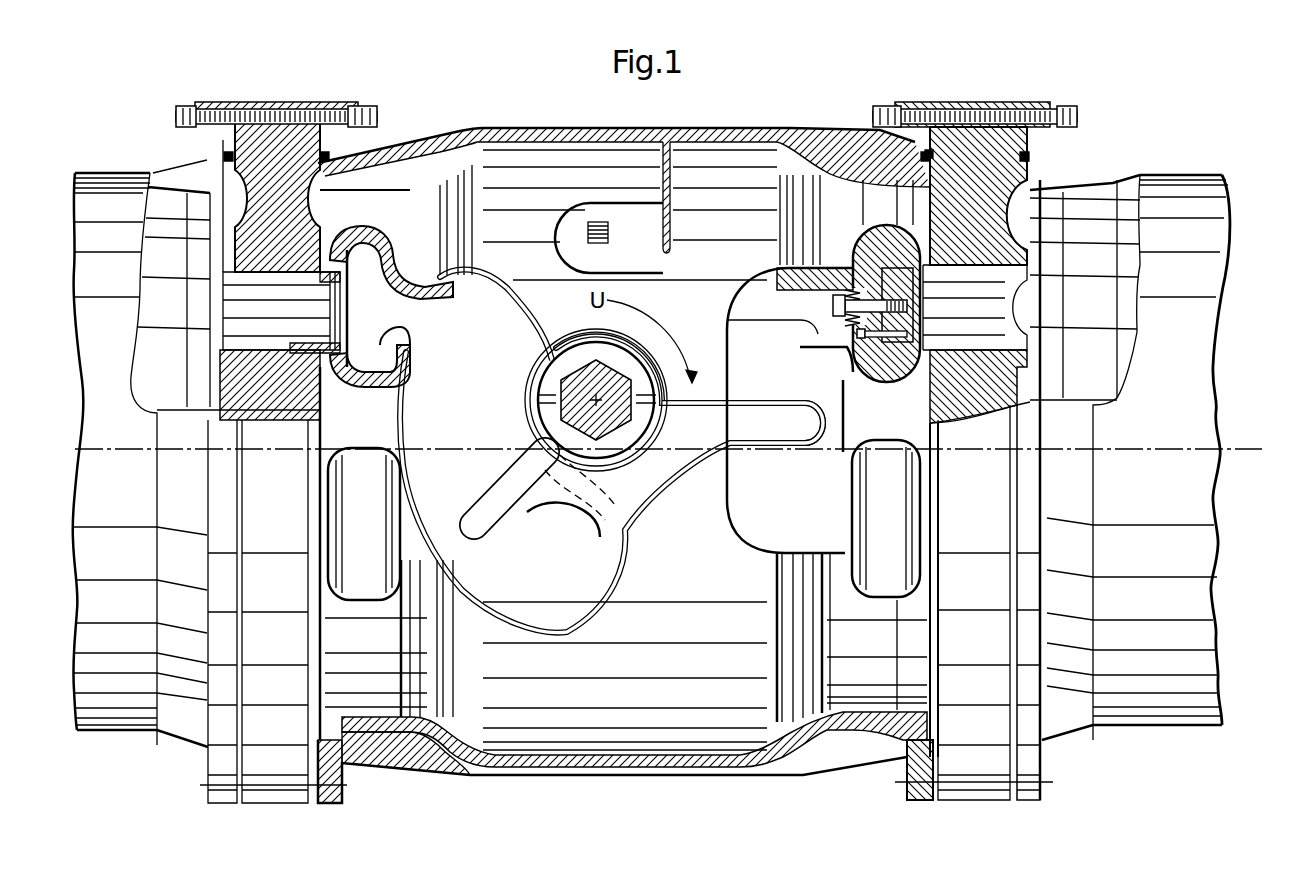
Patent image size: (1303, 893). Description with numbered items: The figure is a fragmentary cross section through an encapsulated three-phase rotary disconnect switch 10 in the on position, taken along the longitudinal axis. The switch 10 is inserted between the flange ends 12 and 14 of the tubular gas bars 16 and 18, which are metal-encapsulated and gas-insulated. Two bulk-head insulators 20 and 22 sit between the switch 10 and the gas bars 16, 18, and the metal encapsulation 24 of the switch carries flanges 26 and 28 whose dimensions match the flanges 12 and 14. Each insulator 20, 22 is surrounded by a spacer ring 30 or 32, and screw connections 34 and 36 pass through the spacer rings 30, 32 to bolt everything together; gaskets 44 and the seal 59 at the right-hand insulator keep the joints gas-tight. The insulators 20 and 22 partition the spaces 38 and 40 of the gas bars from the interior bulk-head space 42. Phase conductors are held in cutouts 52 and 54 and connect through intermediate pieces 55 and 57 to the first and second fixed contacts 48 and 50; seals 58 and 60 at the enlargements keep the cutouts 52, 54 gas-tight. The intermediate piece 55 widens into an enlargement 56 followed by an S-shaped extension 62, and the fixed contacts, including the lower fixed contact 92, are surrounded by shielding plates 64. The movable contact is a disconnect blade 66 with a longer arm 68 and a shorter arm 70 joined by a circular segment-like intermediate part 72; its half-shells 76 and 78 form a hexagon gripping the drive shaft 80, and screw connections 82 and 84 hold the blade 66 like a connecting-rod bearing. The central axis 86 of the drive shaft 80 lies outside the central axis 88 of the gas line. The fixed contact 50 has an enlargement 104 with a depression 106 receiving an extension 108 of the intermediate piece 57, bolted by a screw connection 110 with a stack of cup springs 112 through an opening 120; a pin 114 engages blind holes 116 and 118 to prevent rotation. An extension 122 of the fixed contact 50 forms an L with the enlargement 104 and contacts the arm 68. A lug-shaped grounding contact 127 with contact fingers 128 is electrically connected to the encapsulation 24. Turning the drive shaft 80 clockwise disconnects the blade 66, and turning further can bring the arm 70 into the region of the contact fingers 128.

The rotary disconnect switch 10 is at (641, 776).
The flange end 12 is at (223, 797).
The flange end 14 is at (1028, 797).
The tubular gas bar 16 is at (116, 718).
The tubular gas bar 18 is at (1170, 712).
The bulk-head insulator 20 is at (245, 101).
The bulk-head insulator 22 is at (988, 116).
The metal encapsulation 24 is at (500, 766).
The flange 26 is at (333, 797).
The flange 28 is at (920, 797).
The spacer ring 30 is at (283, 101).
The spacer ring 32 is at (950, 101).
The screw connection 34 is at (178, 113).
The screw connection 36 is at (1078, 115).
The space 38 is at (160, 212).
The space 40 is at (1128, 196).
The bulk-head space 42 is at (508, 150).
The gasket 44 is at (323, 124).
The first fixed contact 48 is at (392, 246).
The second fixed contact 50 is at (800, 549).
The cutout 52 is at (283, 298).
The cutout 54 is at (1025, 275).
The intermediate piece 55 is at (300, 292).
The enlargement 56 is at (370, 238).
The intermediate piece 57 is at (1020, 292).
The seal 58 is at (348, 270).
The seal 59 is at (925, 126).
The seal 60 is at (958, 402).
The S-shaped extension 62 is at (460, 300).
The shielding plates 64 is at (503, 277).
The disconnect blade 66 is at (650, 498).
The arm 68 is at (677, 410).
The arm 70 is at (477, 517).
The intermediate part 72 is at (600, 513).
The first half-shell 76 is at (632, 447).
The second half-shell 78 is at (615, 350).
The drive shaft 80 is at (576, 372).
The screw connection 82 is at (648, 352).
The screw connection 84 is at (532, 380).
The central axis 86 is at (590, 402).
The central axis 88 is at (1236, 452).
The fixed contact 92 is at (437, 553).
The enlargement 104 is at (853, 248).
The depression 106 is at (889, 375).
The extension 108 is at (902, 378).
The screw connection 110 is at (858, 250).
The stack of cup springs 112 is at (815, 271).
The pin 114 is at (853, 355).
The blind hole 116 is at (845, 347).
The blind hole 118 is at (885, 337).
The opening 120 is at (795, 306).
The extension 122 is at (742, 380).
The grounding contact 127 is at (634, 215).
The contact fingers 128 is at (598, 222).